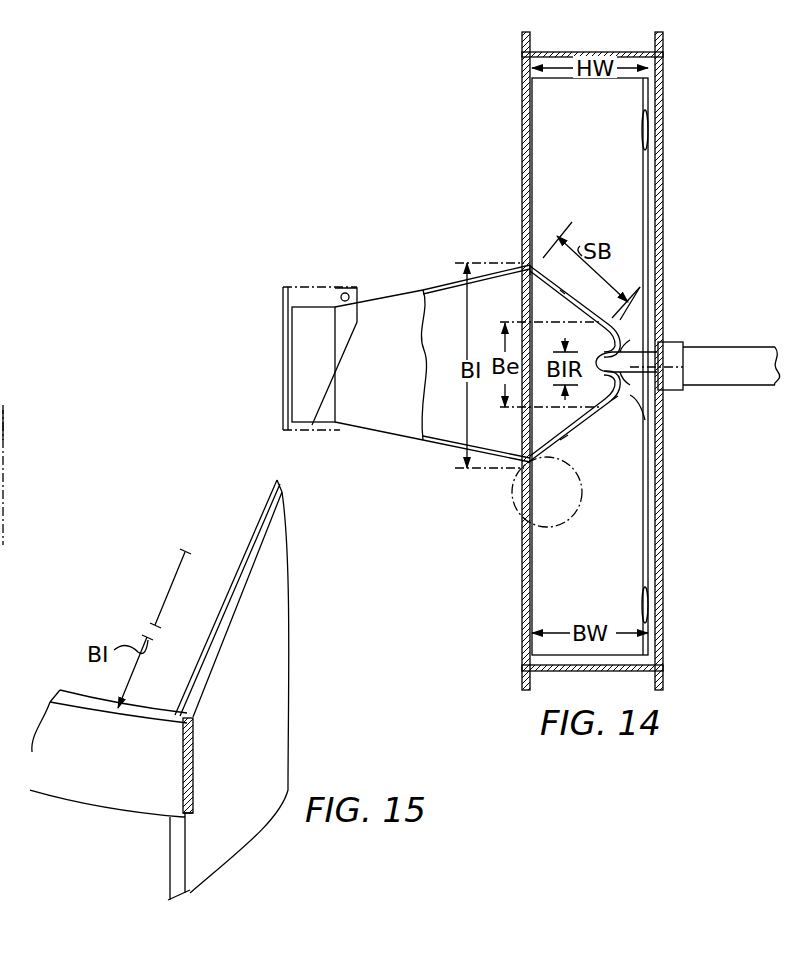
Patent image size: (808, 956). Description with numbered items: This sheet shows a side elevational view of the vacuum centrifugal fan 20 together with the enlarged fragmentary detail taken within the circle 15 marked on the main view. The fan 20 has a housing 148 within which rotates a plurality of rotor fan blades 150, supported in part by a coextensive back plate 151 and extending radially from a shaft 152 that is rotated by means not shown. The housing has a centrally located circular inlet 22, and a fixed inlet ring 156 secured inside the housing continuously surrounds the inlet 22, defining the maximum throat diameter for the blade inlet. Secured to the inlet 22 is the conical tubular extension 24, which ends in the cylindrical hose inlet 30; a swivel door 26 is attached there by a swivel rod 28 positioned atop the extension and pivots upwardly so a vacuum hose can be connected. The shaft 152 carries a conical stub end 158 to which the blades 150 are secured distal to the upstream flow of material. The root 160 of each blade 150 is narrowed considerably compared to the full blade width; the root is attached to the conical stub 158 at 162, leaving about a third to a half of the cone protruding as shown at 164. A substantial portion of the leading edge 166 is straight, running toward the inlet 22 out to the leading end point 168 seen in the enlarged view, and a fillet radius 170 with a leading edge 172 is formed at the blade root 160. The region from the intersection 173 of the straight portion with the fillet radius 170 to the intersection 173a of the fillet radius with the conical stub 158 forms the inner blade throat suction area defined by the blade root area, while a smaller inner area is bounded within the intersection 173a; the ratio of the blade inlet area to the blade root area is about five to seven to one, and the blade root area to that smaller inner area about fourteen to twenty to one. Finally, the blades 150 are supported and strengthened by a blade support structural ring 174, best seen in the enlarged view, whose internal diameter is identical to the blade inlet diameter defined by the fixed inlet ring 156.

In FIG. 14, the vacuum fan 20 is at (500, 180).
In FIG. 15, the vacuum fan 20 is at (13, 431).
In FIG. 14, the inlet 22 is at (505, 450).
In FIG. 14, the tubular extension 24 is at (385, 433).
In FIG. 14, the swivel door 26 is at (300, 287).
In FIG. 14, the swivel rod 28 is at (347, 298).
In FIG. 14, the hose inlet 30 is at (322, 420).
In FIG. 14, the housing 148 is at (522, 83).
In FIG. 14, the rotor fan blades 150 is at (612, 164).
In FIG. 15, the rotor fan blades 150 is at (262, 715).
In FIG. 14, the back plate 151 is at (648, 203).
In FIG. 15, the back plate 151 is at (3, 432).
In FIG. 14, the shaft 152 is at (733, 320).
In FIG. 14, the fixed inlet ring 156 is at (507, 290).
In FIG. 14, the conical stub end 158 is at (632, 398).
In FIG. 14, the fan blade root 160 is at (640, 405).
In FIG. 14, the blade root attachment 162 is at (640, 345).
In FIG. 14, the protruding conical portion 164 is at (575, 416).
In FIG. 14, the leading edge 166 is at (575, 296).
In FIG. 15, the leading end point 168 is at (175, 716).
In FIG. 14, the fillet radius 170 is at (650, 292).
In FIG. 14, the leading edge of fillet radius 172 is at (694, 366).
In FIG. 14, the intersection of straight blade portion and fillet radius 173 is at (558, 445).
In FIG. 14, the intersection of fillet radius and conical stub 173a is at (576, 312).
In FIG. 14, the blade support structural ring 174 is at (520, 240).
In FIG. 15, the blade support structural ring 174 is at (110, 788).
In FIG. 14, the detail view reference 15 is at (573, 512).